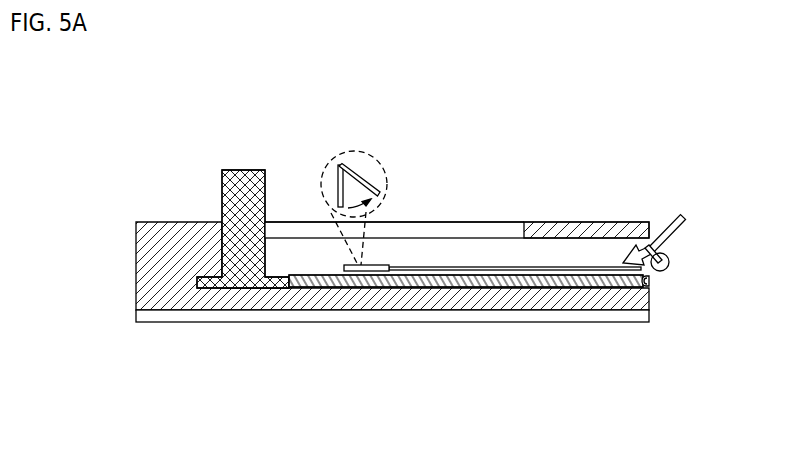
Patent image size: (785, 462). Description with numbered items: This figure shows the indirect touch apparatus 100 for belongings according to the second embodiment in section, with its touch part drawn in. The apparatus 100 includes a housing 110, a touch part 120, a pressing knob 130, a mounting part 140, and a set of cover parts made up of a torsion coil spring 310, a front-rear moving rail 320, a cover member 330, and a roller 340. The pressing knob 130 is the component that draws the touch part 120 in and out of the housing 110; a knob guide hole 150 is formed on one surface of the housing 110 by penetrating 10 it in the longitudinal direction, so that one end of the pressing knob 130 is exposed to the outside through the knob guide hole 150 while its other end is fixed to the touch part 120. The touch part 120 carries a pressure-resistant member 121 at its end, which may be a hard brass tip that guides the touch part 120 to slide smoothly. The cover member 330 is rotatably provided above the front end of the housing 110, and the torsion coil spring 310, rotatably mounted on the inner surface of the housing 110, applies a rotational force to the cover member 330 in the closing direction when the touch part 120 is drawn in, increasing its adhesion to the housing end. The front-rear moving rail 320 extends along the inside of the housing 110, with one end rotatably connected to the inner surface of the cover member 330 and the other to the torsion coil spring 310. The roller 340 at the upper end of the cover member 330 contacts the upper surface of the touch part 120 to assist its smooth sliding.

The indirect touch apparatus for belongings 100 is at (643, 139).
The penetrating 10 is at (465, 230).
The housing 110 is at (150, 255).
The touch part 120 is at (553, 283).
The pressure-resistant member 121 is at (650, 285).
The pressing knob 130 is at (245, 170).
The mounting part 140 is at (192, 313).
The knob guide hole 150 is at (295, 223).
The torsion coil spring 310 is at (382, 265).
The front-rear moving rail 320 is at (497, 268).
The cover member 330 is at (663, 220).
The roller 340 is at (671, 262).